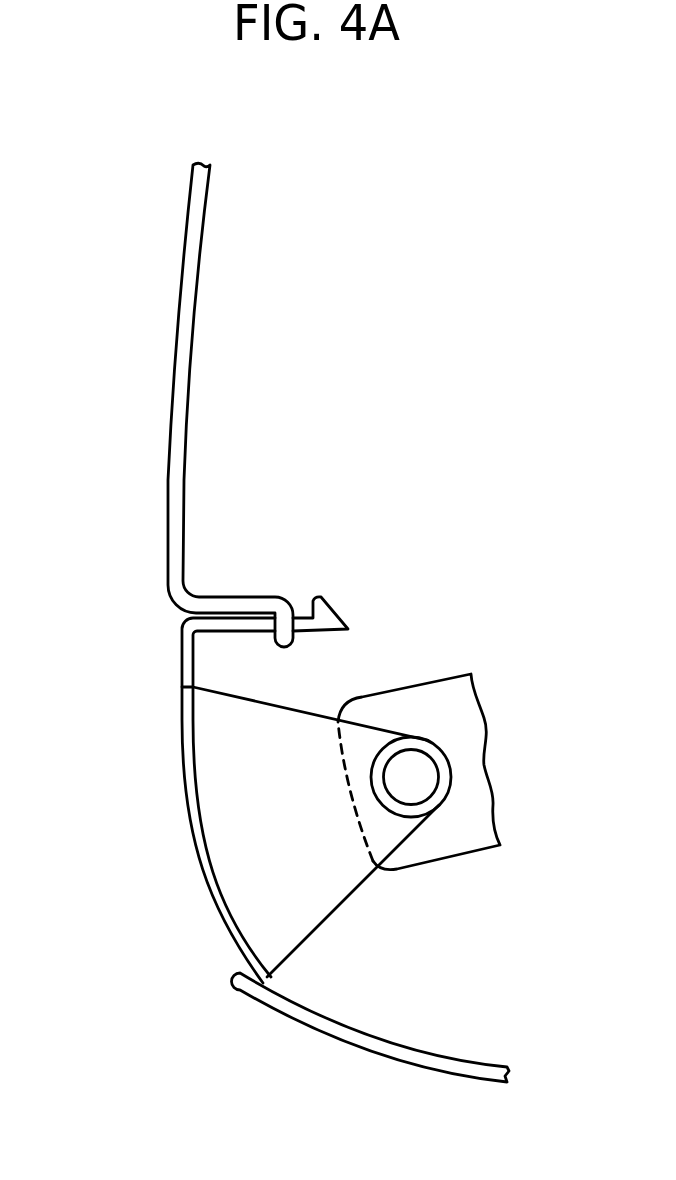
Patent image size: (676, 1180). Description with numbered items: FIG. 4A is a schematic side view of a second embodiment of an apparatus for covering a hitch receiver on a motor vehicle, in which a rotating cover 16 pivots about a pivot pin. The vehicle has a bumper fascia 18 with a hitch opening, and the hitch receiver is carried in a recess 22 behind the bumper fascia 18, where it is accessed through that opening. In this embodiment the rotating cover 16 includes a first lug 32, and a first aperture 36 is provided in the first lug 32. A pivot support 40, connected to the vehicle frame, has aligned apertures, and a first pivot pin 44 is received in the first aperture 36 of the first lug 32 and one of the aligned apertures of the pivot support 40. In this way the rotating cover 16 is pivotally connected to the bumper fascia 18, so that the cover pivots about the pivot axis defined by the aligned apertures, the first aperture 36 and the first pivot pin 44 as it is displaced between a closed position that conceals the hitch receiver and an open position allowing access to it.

The rotating cover 16 is at (185, 824).
The bumper fascia 18 is at (167, 472).
The recess 22 is at (350, 992).
The first lug 32 is at (290, 740).
The first aperture 36 is at (430, 770).
The pivot support 40 is at (453, 838).
The first pivot pin 44 is at (420, 782).